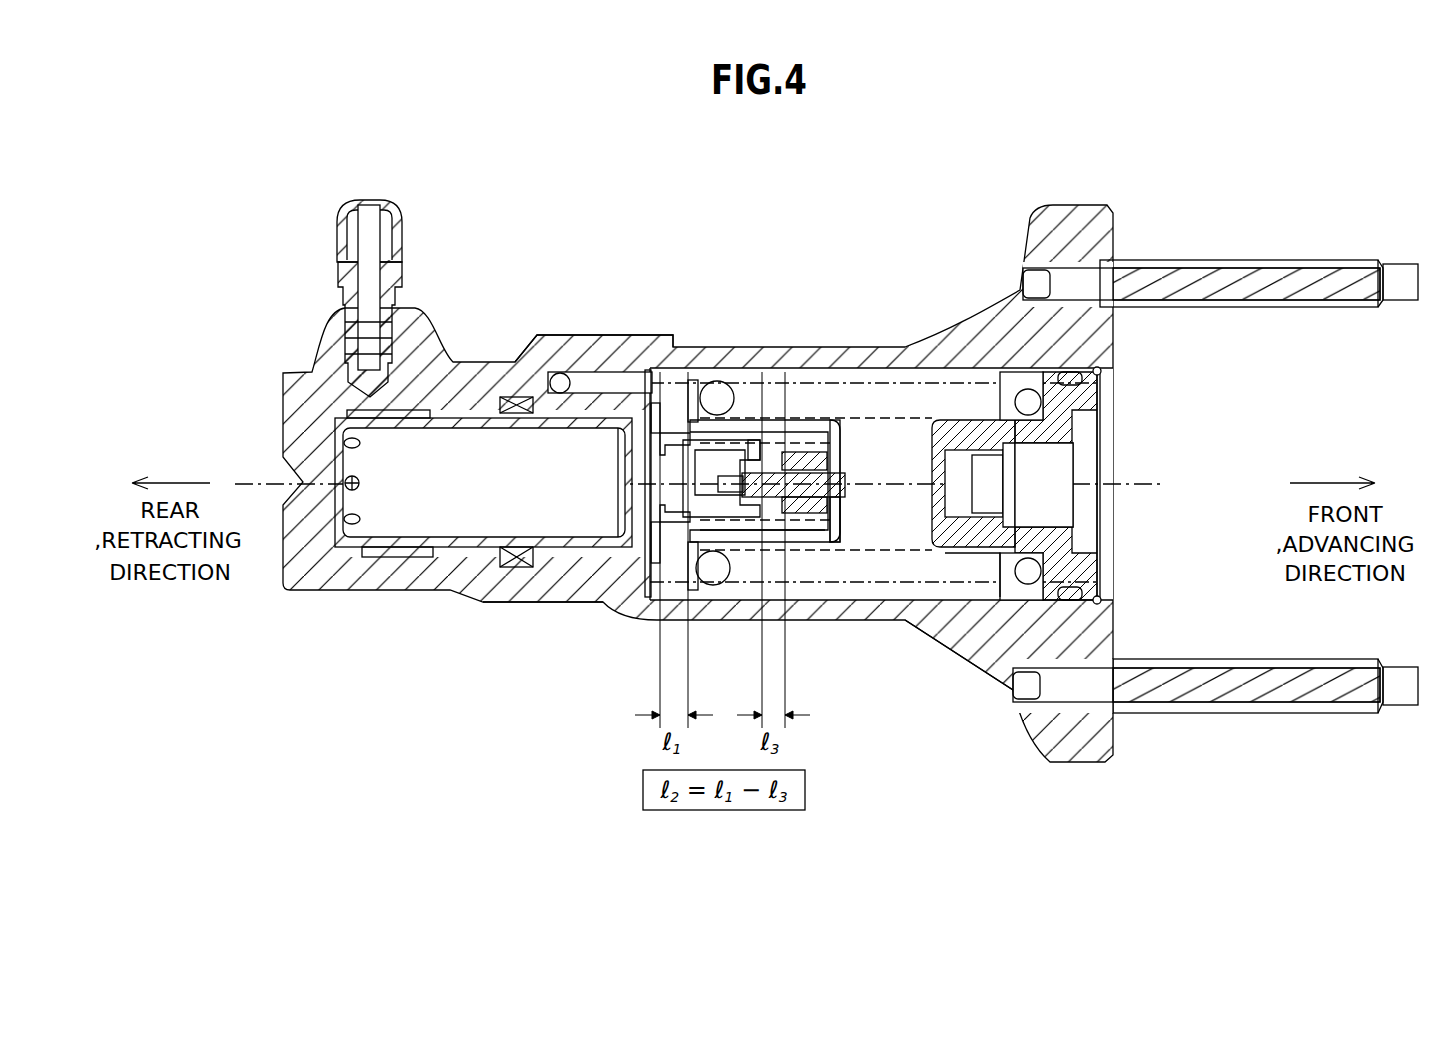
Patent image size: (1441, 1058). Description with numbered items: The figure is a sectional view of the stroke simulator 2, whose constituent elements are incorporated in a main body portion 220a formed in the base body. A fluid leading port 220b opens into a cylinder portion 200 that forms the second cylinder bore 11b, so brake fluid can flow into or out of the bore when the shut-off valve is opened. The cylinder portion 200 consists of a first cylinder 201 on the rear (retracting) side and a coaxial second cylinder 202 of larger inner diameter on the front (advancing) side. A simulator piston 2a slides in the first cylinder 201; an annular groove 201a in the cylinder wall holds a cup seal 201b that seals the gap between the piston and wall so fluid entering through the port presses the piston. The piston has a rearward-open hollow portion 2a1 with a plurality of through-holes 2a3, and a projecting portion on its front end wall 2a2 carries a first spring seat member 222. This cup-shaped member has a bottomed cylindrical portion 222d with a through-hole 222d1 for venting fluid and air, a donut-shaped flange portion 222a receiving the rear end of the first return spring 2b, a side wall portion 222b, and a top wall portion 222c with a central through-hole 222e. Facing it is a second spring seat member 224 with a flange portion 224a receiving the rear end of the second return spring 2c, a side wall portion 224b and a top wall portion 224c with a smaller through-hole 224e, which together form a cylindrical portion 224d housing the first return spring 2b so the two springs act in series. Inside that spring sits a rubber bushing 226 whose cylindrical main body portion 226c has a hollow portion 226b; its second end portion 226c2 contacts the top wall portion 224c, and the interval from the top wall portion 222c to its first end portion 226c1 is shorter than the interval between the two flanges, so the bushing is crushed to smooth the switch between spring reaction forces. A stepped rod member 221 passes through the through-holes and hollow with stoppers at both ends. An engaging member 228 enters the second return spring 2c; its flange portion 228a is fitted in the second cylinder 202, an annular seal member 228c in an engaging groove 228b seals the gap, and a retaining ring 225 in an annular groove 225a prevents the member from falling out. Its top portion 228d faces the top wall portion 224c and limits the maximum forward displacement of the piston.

The stroke simulator 2 is at (1082, 125).
The simulator piston 2a is at (383, 540).
The hollow portion 2a1 is at (437, 532).
The front end wall 2a2 is at (618, 520).
The through-holes 2a3 is at (366, 515).
The first return spring 2b is at (668, 345).
The second return spring 2c is at (990, 385).
The second cylinder bore 11b is at (472, 467).
The cylinder portion 200 is at (397, 373).
The first cylinder 201 is at (418, 557).
The annular groove 201a is at (545, 562).
The cup seal 201b is at (517, 568).
The second cylinder 202 is at (952, 625).
The main body portion 220a is at (480, 376).
The fluid leading port 220b is at (352, 212).
The rod member 221 is at (850, 490).
The first spring seat member 222 is at (652, 490).
The flange portion 222a is at (648, 395).
The side wall portion 222b is at (640, 470).
The top wall portion 222c is at (750, 400).
The cylindrical portion 222d is at (662, 600).
The through-hole 222d1 is at (660, 462).
The through-hole 222e is at (705, 600).
The second spring seat member 224 is at (840, 520).
The flange portion 224a is at (710, 385).
The side wall portion 224b is at (845, 420).
The top wall portion 224c is at (870, 428).
The cylindrical portion 224d is at (812, 425).
The through-hole 224e is at (840, 500).
The retaining ring 225 is at (1101, 371).
The annular groove 225a is at (1100, 603).
The rubber bushing 226 is at (838, 447).
The hollow portion 226b is at (795, 600).
The cylindrical main body portion 226c is at (835, 585).
The first end portion 226c1 is at (790, 430).
The second end portion 226c2 is at (835, 468).
The engaging member 228 is at (990, 560).
The flange portion 228a is at (1025, 590).
The engaging groove 228b is at (1080, 590).
The annular seal member 228c is at (1095, 592).
The top portion 228d is at (930, 580).